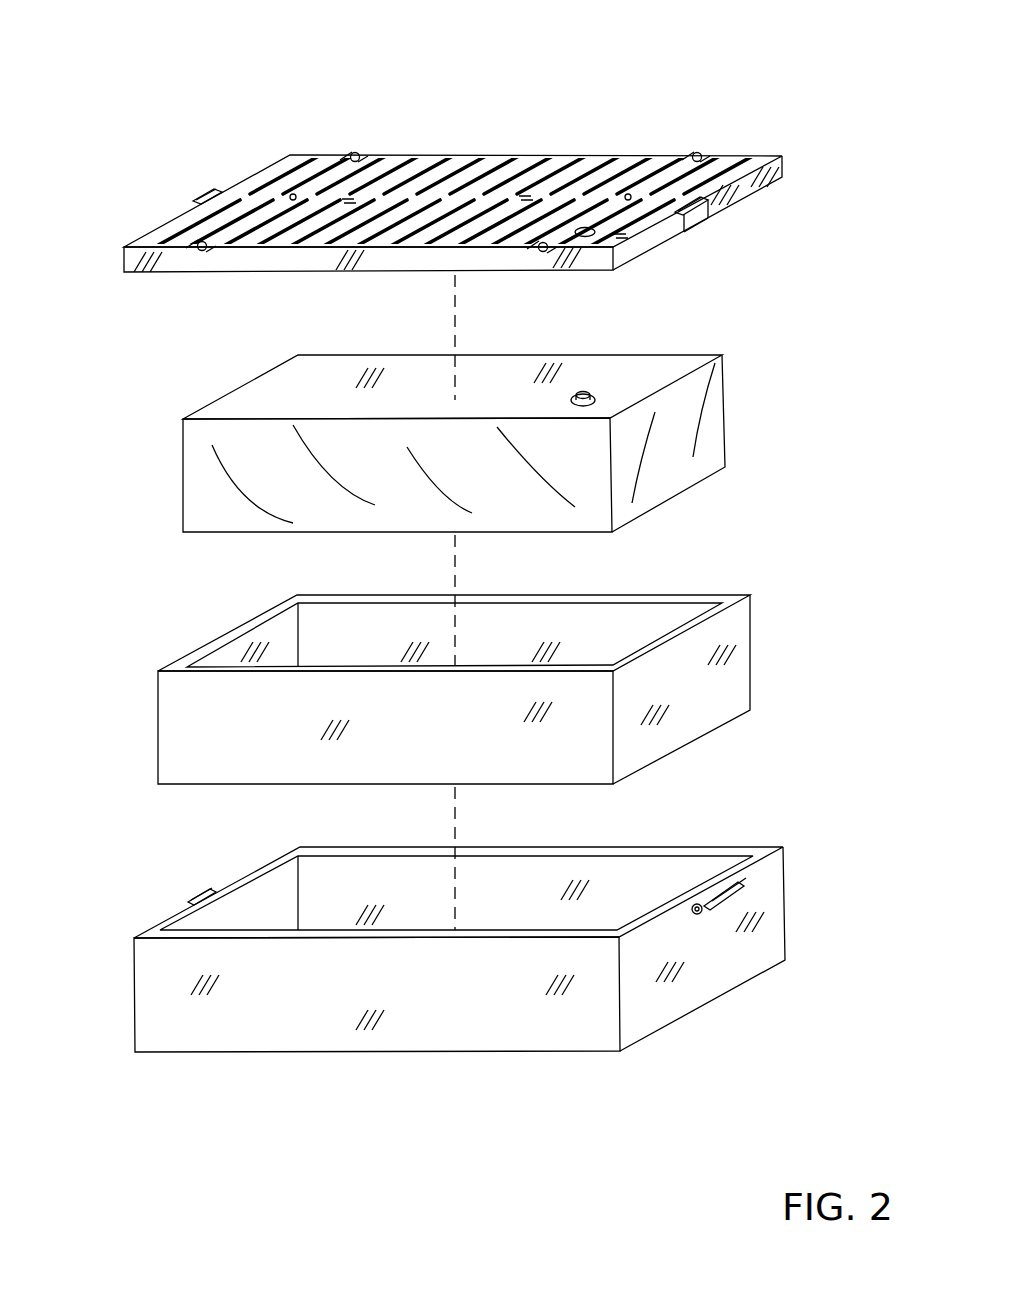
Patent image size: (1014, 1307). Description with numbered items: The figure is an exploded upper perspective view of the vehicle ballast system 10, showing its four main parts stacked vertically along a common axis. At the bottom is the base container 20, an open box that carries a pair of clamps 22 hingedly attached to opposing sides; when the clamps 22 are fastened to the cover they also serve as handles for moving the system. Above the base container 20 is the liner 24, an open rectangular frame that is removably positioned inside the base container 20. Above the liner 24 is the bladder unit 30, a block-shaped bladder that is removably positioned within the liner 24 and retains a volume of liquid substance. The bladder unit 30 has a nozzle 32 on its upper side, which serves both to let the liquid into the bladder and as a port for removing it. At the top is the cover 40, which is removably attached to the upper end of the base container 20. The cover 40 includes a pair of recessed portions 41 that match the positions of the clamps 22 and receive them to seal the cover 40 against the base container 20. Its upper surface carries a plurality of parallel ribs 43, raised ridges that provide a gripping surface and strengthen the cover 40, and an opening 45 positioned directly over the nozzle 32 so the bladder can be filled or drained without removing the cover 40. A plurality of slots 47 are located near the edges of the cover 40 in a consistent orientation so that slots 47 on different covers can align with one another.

The vehicle ballast system 10 is at (166, 118).
The base container 20 is at (406, 1066).
The clamps 22 is at (197, 890).
The liner 24 is at (752, 681).
The bladder unit 30 is at (738, 440).
The nozzle 32 is at (592, 394).
The cover 40 is at (530, 140).
The recessed portions 41 is at (212, 197).
The ribs 43 is at (613, 158).
The opening 45 is at (586, 237).
The slots 47 is at (700, 157).